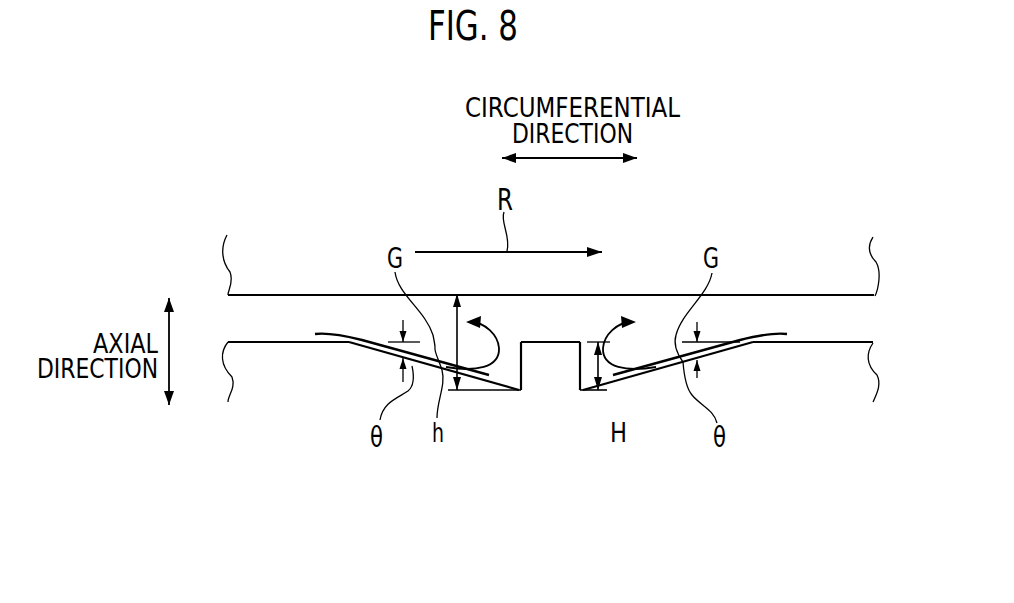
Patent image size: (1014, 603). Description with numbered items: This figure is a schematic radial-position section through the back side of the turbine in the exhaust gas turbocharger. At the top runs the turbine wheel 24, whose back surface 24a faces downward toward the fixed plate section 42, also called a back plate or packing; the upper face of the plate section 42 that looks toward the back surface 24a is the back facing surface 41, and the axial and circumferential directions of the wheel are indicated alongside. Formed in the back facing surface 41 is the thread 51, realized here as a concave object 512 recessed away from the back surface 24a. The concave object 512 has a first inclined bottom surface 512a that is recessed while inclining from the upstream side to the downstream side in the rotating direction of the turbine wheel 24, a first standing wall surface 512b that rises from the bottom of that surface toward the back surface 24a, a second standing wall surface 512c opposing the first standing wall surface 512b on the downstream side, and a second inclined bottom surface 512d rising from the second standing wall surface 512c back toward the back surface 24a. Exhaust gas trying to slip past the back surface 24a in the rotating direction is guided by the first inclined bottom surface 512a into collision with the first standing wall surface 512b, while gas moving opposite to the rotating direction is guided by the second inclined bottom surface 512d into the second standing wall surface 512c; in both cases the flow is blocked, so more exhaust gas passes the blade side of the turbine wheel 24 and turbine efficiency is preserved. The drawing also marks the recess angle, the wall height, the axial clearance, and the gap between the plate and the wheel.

The turbine wheel 24 is at (850, 262).
The back surface 24a is at (847, 300).
The back facing surface 41 is at (847, 337).
The plate section 42 is at (850, 380).
The thread 51 is at (551, 461).
The concave object 512 is at (551, 461).
The first inclined bottom surface 512a is at (491, 377).
The first standing wall surface 512b is at (512, 374).
The second standing wall surface 512c is at (583, 373).
The second inclined bottom surface 512d is at (668, 431).